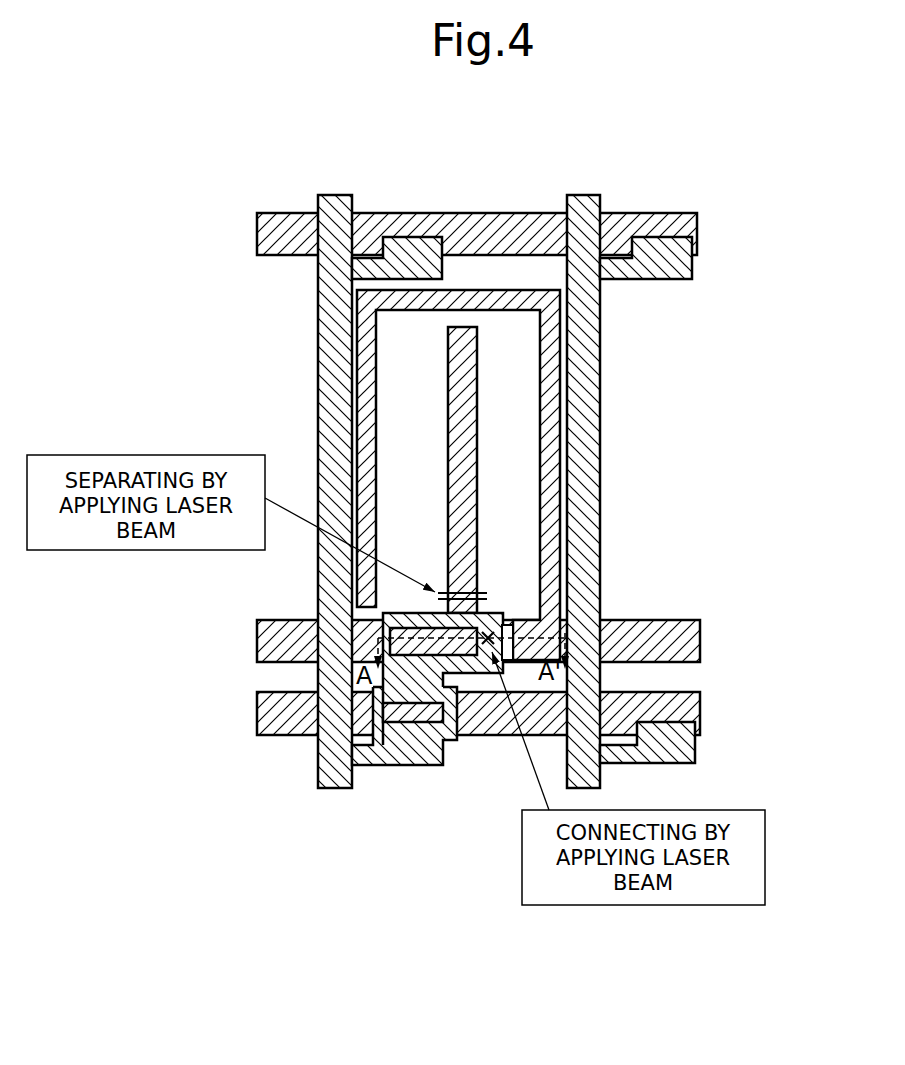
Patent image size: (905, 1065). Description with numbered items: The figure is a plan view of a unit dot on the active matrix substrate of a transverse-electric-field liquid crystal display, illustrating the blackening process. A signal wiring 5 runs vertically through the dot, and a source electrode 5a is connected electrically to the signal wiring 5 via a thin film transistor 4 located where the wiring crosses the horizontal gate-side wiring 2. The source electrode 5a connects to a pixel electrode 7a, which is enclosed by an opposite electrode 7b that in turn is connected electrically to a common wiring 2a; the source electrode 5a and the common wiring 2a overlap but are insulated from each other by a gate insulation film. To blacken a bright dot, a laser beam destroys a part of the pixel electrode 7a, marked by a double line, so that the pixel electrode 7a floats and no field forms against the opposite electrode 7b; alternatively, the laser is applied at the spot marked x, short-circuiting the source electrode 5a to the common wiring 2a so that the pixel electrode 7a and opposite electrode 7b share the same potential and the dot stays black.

The gate wiring 2 is at (686, 706).
The common wiring 2a is at (686, 633).
The thin film transistor 4 is at (381, 712).
The signal wiring 5 is at (337, 378).
The source electrode 5a is at (498, 612).
The pixel electrode 7a is at (461, 422).
The opposite electrode 7b is at (548, 343).